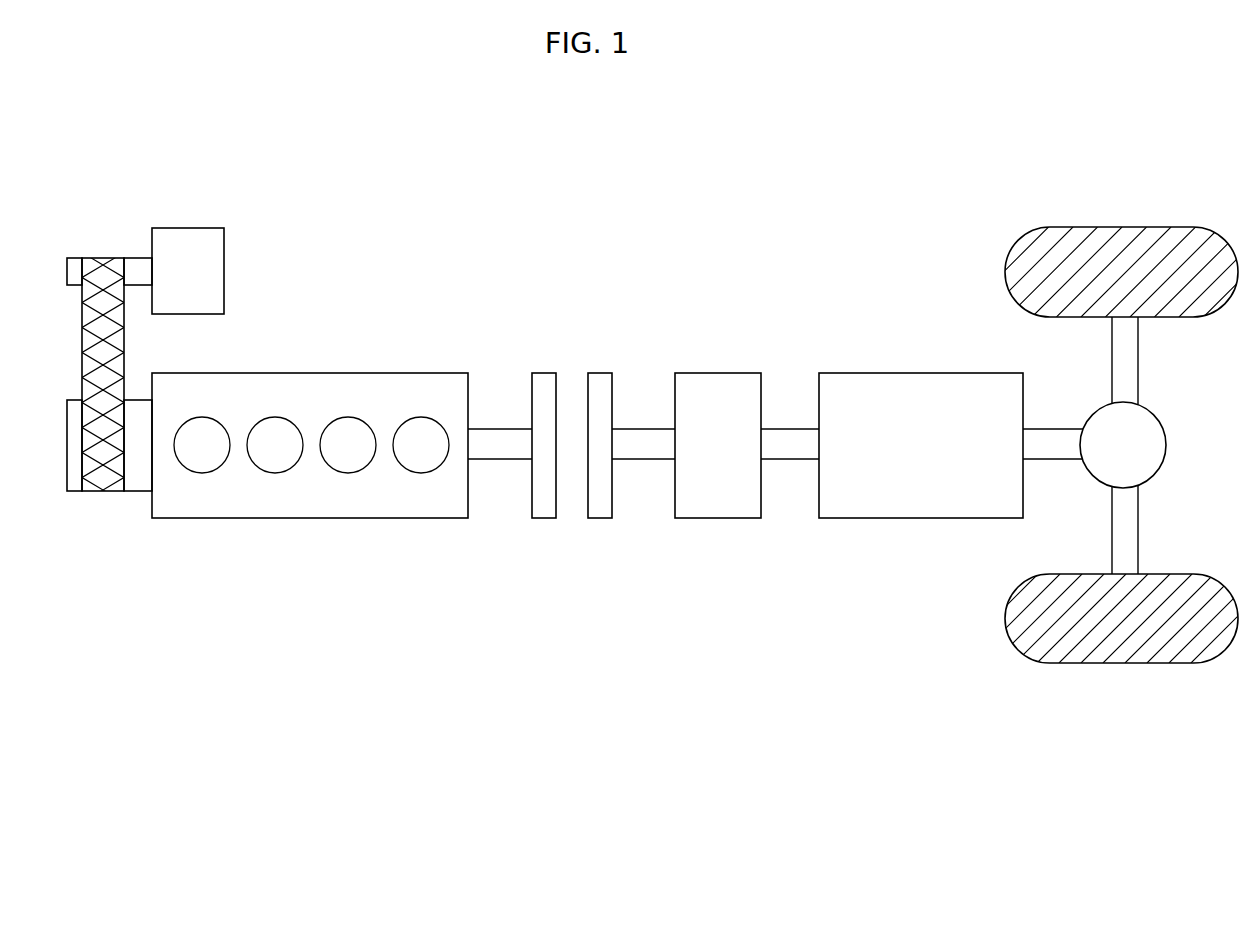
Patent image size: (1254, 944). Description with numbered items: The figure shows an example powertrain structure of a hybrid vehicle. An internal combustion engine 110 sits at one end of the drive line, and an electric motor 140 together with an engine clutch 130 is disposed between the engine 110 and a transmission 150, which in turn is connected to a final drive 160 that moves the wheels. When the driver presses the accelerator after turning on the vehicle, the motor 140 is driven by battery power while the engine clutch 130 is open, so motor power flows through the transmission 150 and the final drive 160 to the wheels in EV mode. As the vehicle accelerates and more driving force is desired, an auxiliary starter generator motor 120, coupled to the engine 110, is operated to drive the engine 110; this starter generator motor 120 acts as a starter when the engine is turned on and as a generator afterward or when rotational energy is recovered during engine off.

The internal combustion engine 110 is at (415, 373).
The starter generator motor 120 is at (173, 226).
The engine clutch 130 is at (600, 373).
The electric motor 140 is at (708, 373).
The transmission 150 is at (970, 373).
The final drive 160 is at (1163, 418).